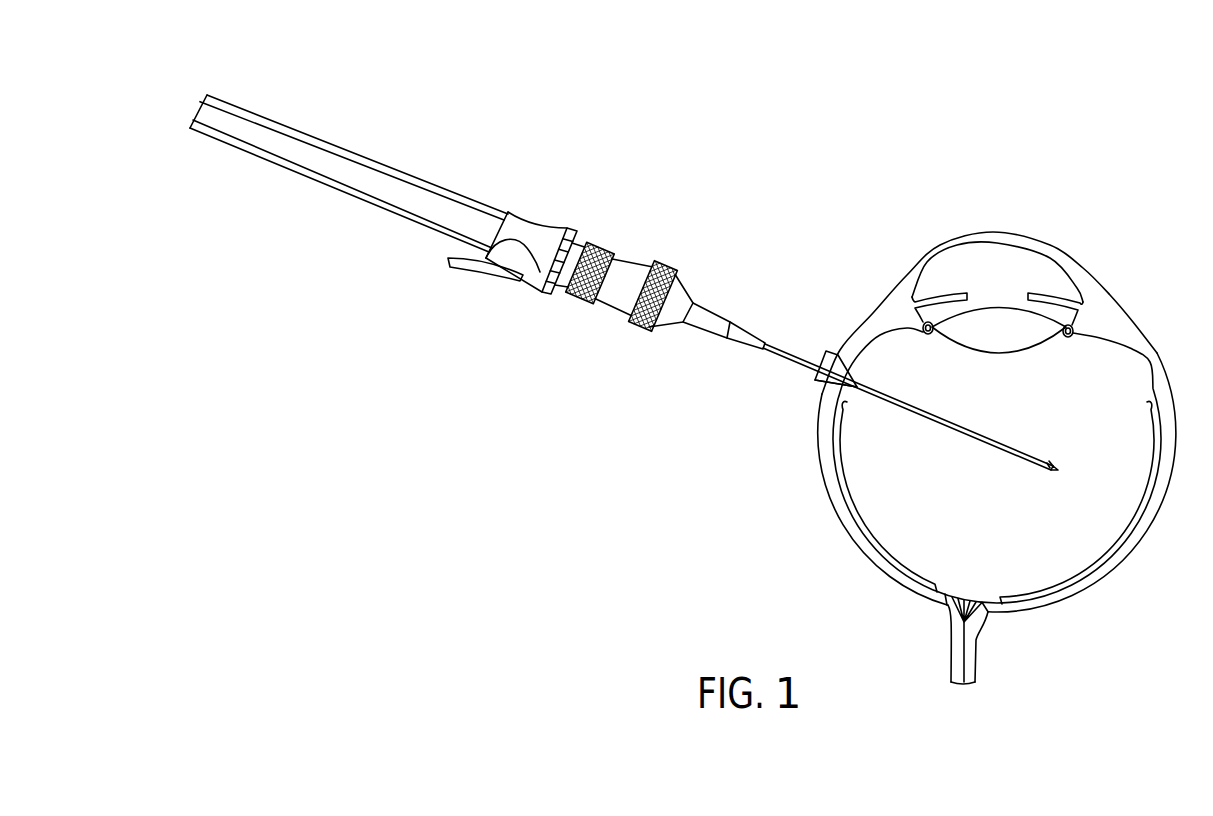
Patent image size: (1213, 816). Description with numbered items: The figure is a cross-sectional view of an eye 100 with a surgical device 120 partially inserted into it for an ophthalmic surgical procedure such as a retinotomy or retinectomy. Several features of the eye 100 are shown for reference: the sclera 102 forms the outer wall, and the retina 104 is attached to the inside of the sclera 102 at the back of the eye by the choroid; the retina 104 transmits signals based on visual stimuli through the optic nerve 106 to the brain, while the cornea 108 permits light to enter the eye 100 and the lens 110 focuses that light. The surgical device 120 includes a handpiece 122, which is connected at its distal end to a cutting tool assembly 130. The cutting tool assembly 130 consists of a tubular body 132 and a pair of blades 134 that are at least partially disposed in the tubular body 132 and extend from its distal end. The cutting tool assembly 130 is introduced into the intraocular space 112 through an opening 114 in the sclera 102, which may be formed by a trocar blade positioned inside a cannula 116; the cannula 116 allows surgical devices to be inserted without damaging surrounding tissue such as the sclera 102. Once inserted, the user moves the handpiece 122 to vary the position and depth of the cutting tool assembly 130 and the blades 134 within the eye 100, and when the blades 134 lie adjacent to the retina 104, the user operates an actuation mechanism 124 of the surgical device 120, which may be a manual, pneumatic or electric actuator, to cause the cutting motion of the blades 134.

The eye 100 is at (1115, 290).
The sclera 102 is at (840, 520).
The retina 104 is at (1098, 578).
The optic nerve 106 is at (965, 658).
The cornea 108 is at (993, 234).
The lens 110 is at (1003, 316).
The intraocular space 112 is at (982, 535).
The opening 114 is at (838, 350).
The cannula 116 is at (818, 380).
The surgical device 120 is at (559, 181).
The handpiece 122 is at (298, 131).
The actuation mechanism 124 is at (482, 268).
The cutting tool assembly 130 is at (785, 339).
The tubular body 132 is at (925, 416).
The blades 134 is at (1054, 456).